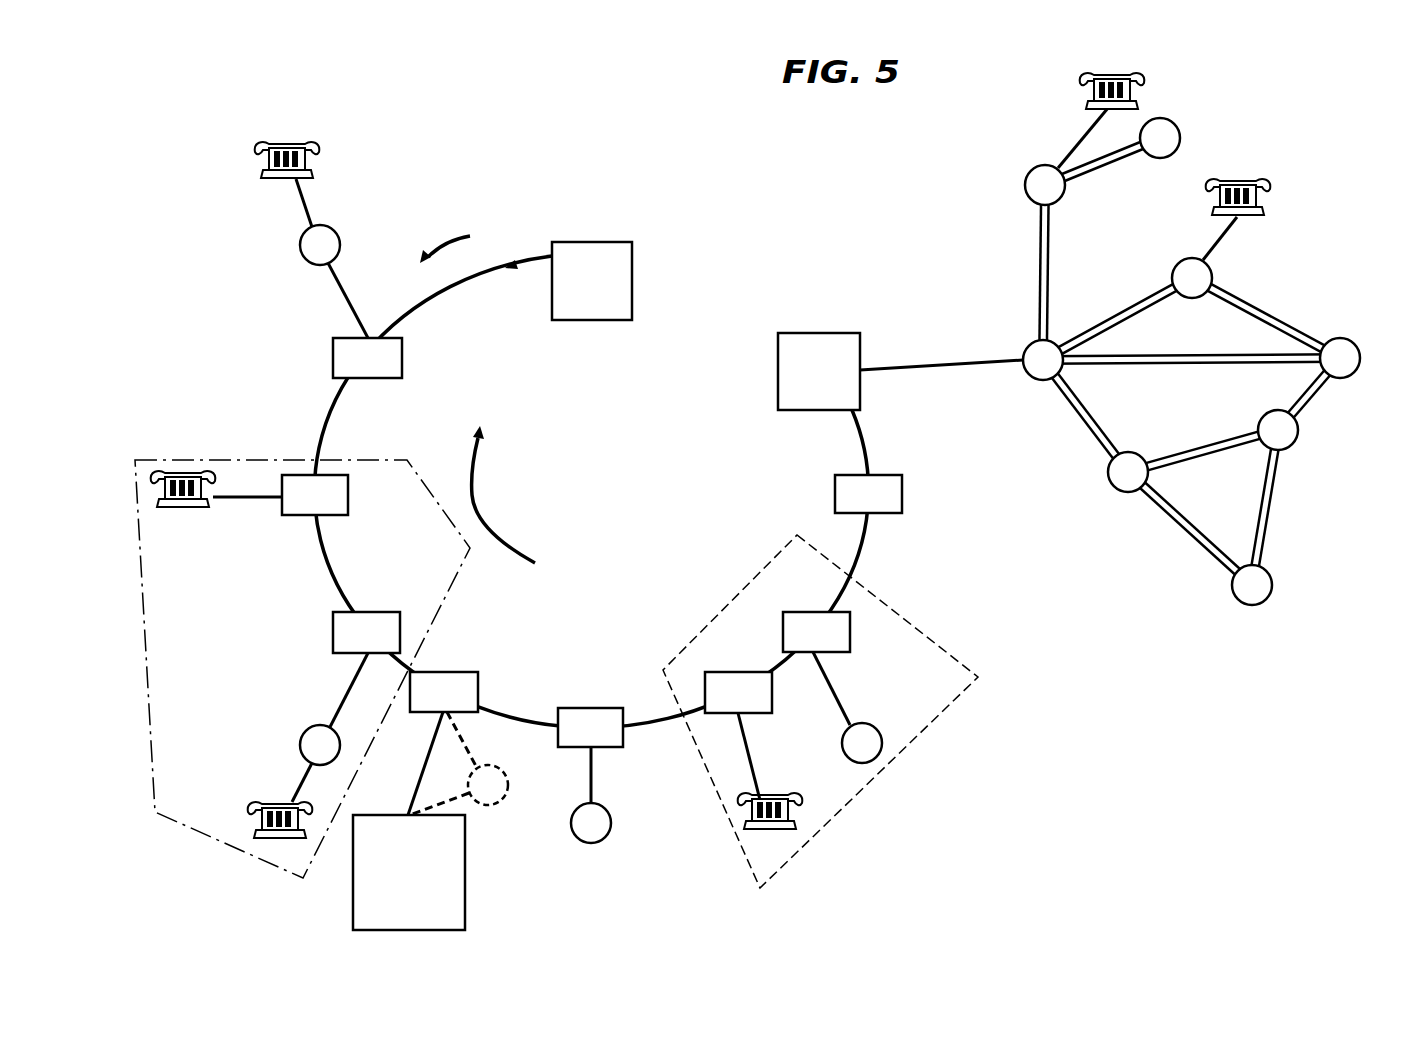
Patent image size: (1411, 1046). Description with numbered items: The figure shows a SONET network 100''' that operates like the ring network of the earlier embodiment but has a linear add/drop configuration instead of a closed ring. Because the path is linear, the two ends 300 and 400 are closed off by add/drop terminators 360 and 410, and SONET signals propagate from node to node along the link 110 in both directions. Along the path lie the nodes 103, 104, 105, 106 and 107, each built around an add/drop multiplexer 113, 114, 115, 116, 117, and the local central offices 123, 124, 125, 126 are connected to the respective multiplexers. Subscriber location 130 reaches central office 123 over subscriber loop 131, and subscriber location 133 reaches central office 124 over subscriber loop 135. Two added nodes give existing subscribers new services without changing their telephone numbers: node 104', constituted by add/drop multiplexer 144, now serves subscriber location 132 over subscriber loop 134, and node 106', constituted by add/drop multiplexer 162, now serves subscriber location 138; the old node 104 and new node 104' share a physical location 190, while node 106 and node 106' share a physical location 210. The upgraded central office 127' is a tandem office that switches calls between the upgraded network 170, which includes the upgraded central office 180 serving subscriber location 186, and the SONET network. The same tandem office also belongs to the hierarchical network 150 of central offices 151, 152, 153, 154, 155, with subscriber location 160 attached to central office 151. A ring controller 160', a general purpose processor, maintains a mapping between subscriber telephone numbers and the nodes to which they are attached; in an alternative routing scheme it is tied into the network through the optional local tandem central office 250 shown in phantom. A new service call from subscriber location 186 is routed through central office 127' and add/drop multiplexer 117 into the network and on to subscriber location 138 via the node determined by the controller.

The linear network 100''' is at (509, 492).
The node 103 is at (462, 244).
The node 104 is at (246, 657).
The node 104' is at (171, 574).
The node 105 is at (553, 785).
The node 106 is at (896, 653).
The node 106' is at (799, 761).
The node 107 is at (970, 393).
The ring network link 110 is at (432, 312).
The add/drop multiplexer 113 is at (371, 380).
The add/drop multiplexer 114 is at (387, 612).
The add/drop multiplexer 115 is at (603, 708).
The add/drop multiplexer 116 is at (803, 612).
The add/drop multiplexer 117 is at (902, 488).
The central office 123 is at (341, 233).
The central office 124 is at (320, 725).
The central office 125 is at (611, 815).
The central office 126 is at (877, 732).
The upgraded central office 127' is at (1020, 334).
The subscriber location 130 is at (293, 138).
The subscriber loop 131 is at (307, 208).
The subscriber location 132 is at (188, 508).
The subscriber location 133 is at (260, 803).
The subscriber loop 134 is at (252, 497).
The subscriber loop 135 is at (302, 762).
The subscriber location 138 is at (742, 797).
The add/drop multiplexer 144 is at (348, 500).
The hierarchical network 150 is at (1120, 280).
The central office 151 is at (1188, 258).
The central office 152 is at (1333, 341).
The central office 153 is at (1299, 432).
The central office 154 is at (1272, 584).
The central office 155 is at (1134, 453).
The subscriber location 160 is at (1259, 173).
The ring controller 160' is at (453, 821).
The add/drop multiplexer 162 is at (757, 672).
The upgraded network 170 is at (1005, 222).
The upgraded central office 180 is at (1042, 165).
The subscriber location 186 is at (1143, 90).
The physical location 190 is at (155, 812).
The physical location 210 is at (910, 742).
The local tandem central office 250 is at (494, 805).
The end of linear network 300 is at (563, 215).
The add/drop terminator 360 is at (614, 242).
The end of linear network 400 is at (830, 310).
The add/drop terminator 410 is at (778, 346).